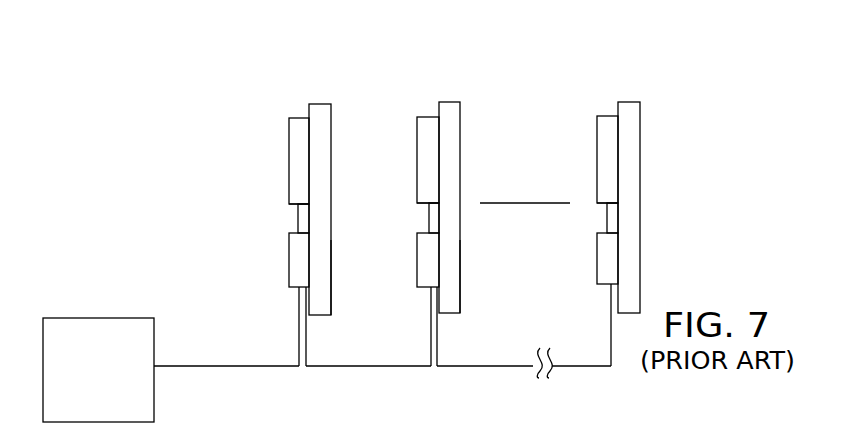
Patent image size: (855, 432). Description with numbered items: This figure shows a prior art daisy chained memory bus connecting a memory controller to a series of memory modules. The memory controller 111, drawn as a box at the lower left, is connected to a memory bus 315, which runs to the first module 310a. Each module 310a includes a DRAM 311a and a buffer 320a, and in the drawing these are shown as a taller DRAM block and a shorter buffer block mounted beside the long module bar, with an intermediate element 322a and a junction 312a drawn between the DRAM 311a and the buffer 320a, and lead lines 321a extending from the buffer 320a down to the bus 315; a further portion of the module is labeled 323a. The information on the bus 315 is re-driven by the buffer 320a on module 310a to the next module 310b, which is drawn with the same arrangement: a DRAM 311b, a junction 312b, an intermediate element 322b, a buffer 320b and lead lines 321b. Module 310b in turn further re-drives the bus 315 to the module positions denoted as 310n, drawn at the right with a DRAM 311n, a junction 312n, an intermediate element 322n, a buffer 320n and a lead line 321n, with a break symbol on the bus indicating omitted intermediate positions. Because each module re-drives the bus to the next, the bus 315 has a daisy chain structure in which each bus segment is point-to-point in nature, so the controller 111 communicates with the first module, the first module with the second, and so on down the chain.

The memory controller 111 is at (112, 318).
The memory bus 315 is at (221, 366).
The module 310a is at (323, 99).
The DRAM 311a is at (300, 118).
The first connection 312a is at (290, 204).
The first intermediate connector 322a is at (298, 226).
The buffer 320a is at (289, 263).
The first lead lines 321a is at (289, 288).
The first bar lower portion 323a is at (333, 283).
The module 310b is at (453, 97).
The second upper electrode 311b is at (428, 117).
The second connection 312b is at (418, 203).
The second intermediate connector 322b is at (429, 226).
The second lower electrode 320b is at (417, 263).
The second lead lines 321b is at (417, 288).
The module 310n is at (634, 97).
The nth upper electrode 311n is at (602, 116).
The nth connection 312n is at (597, 203).
The nth intermediate connector 322n is at (607, 226).
The nth lower electrode 320n is at (597, 263).
The nth lead line 321n is at (597, 288).